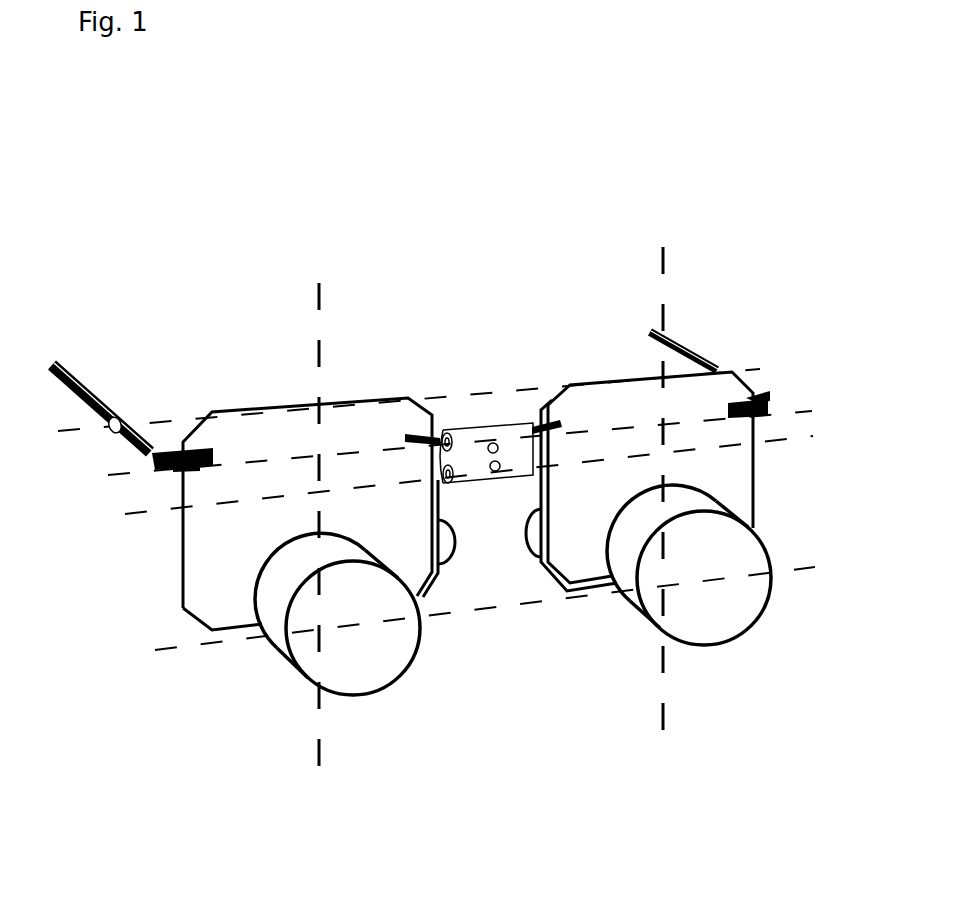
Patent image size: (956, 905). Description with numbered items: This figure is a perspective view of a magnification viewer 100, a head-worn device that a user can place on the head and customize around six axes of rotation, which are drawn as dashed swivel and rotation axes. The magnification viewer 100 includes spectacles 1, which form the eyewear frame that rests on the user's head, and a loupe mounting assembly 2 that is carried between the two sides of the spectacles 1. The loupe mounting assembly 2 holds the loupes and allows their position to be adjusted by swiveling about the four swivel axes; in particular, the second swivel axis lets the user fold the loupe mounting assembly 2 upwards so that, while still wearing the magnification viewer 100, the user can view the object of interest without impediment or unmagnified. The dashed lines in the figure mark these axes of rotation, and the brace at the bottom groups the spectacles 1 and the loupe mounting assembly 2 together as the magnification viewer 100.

The spectacles 1 is at (233, 408).
The loupe mounting assembly 2 is at (478, 477).
The magnification viewer 100 is at (441, 543).